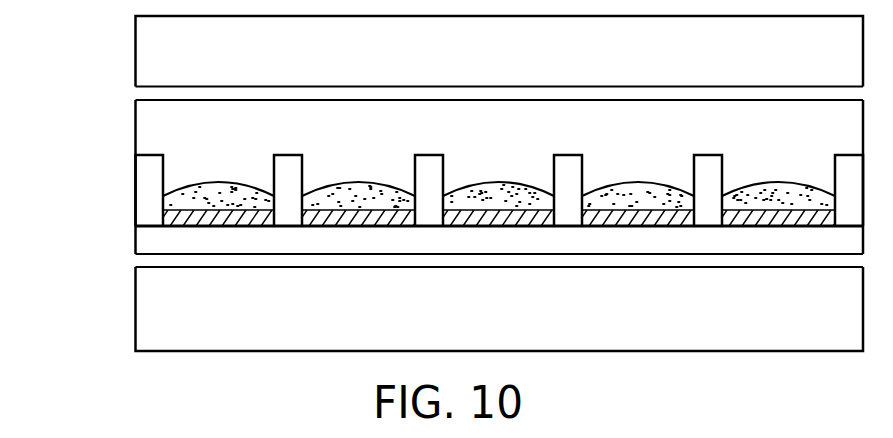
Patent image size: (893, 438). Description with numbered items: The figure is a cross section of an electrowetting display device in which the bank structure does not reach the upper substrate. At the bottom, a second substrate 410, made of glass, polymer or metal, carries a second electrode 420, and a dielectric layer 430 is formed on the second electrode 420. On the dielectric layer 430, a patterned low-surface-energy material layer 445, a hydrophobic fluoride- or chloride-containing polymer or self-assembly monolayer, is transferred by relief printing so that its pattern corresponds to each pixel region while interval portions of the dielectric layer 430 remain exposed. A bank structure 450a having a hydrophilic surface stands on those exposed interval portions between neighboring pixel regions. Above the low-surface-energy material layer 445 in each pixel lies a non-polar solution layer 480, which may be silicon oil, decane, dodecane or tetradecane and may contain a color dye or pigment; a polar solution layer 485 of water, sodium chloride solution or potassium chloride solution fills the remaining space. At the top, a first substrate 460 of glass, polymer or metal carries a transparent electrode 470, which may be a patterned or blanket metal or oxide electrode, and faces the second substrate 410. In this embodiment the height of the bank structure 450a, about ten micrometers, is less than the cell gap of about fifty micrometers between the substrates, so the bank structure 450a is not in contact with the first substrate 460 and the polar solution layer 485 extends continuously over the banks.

The second substrate 410 is at (150, 308).
The second electrode 420 is at (150, 262).
The dielectric layer 430 is at (150, 238).
The low-surface-energy material layer 445 is at (165, 211).
The bank structure 450a is at (150, 170).
The non-polar solution layer 480 is at (165, 193).
The polar solution layer 485 is at (150, 127).
The transparent electrode 470 is at (150, 94).
The first substrate 460 is at (150, 51).